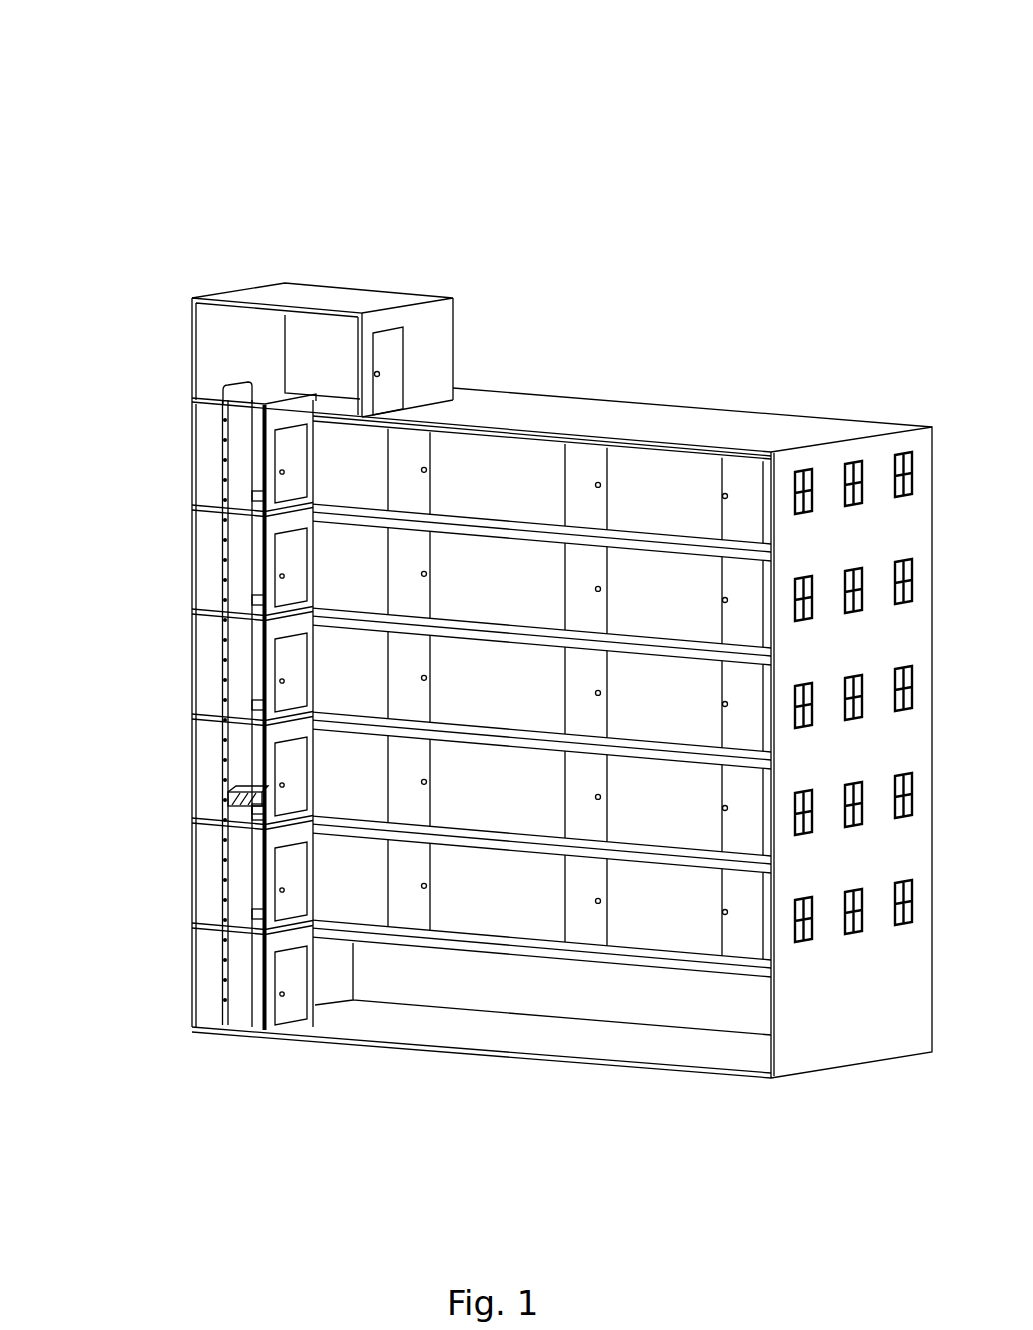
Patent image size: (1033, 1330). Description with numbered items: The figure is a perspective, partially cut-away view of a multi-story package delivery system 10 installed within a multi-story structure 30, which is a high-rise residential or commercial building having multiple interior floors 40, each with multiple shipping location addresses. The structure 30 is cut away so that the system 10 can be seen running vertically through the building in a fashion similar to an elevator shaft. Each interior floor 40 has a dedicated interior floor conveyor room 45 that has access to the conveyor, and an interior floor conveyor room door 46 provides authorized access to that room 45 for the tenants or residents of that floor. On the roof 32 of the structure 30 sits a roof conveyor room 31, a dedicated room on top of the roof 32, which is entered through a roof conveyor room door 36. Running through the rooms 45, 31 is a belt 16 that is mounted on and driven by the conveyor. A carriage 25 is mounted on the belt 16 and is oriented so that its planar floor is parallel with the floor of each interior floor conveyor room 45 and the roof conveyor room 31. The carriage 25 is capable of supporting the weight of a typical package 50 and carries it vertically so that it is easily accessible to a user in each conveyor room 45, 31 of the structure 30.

The multi-story package delivery system 10 is at (120, 172).
The multi-story structure 30 is at (170, 287).
The roof conveyor room 31 is at (275, 290).
The roof conveyor room door 36 is at (388, 352).
The roof 32 is at (470, 405).
The interior floor conveyor room door 46 is at (292, 646).
The interior floor conveyor room 45 is at (270, 655).
The package 50 is at (240, 795).
The carriage 25 is at (225, 805).
The belt 16 is at (235, 990).
The interior floor 40 is at (482, 772).